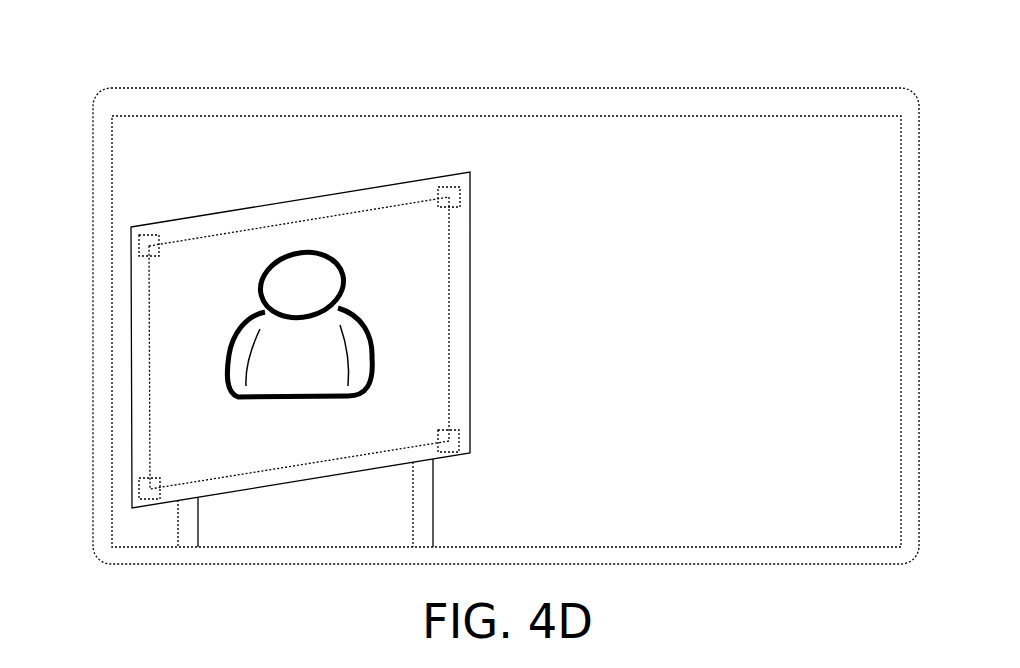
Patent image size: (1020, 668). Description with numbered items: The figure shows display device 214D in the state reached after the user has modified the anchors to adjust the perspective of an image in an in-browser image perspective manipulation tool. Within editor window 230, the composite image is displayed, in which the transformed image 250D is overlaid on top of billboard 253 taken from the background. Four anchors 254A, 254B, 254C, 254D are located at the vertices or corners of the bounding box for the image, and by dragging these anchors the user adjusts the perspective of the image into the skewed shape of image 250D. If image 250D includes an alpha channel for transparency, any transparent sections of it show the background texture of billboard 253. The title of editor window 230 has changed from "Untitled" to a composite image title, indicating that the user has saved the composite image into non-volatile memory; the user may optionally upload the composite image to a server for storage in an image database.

The display device 214D is at (812, 64).
The editor window 230 is at (497, 117).
The image 250D is at (450, 322).
The billboard 253 is at (131, 458).
The anchor 254A is at (148, 225).
The anchor 254B is at (438, 189).
The anchor 254C is at (148, 500).
The anchor 254D is at (447, 453).